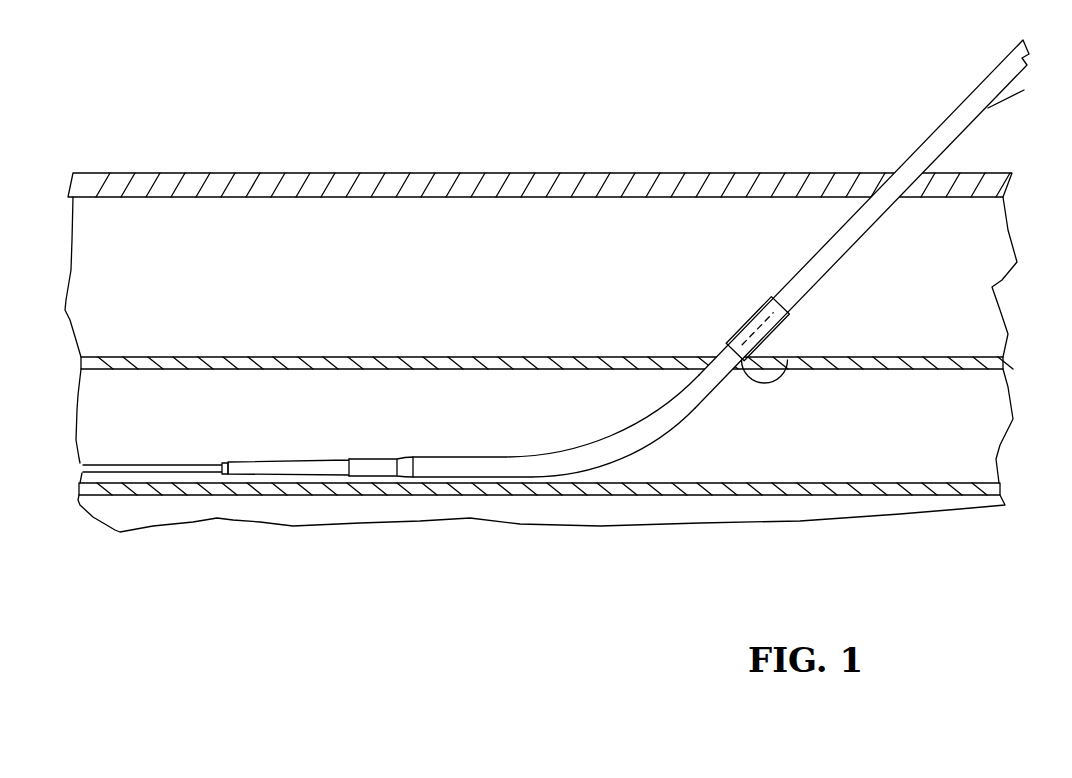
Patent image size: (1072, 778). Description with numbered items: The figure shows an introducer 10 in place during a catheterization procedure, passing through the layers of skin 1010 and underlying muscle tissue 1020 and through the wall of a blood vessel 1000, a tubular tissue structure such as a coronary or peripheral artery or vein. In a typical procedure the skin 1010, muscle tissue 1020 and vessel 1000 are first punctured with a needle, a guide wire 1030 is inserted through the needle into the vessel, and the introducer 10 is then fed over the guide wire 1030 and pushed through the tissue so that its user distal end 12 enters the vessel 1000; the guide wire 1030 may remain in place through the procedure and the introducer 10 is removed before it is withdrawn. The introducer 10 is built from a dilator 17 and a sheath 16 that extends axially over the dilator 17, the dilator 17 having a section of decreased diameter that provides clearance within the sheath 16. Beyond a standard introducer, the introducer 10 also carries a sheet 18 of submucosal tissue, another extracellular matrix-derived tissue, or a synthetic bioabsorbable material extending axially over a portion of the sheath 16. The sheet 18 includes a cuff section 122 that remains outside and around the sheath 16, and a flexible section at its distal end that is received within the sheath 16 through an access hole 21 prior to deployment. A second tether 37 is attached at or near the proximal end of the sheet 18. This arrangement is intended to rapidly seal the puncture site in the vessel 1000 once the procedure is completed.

The introducer 10 is at (906, 140).
The user distal end 12 is at (422, 400).
The sheath 16 is at (468, 468).
The dilator 17 is at (323, 466).
The sheet 18 is at (737, 306).
The access hole 21 is at (788, 360).
The second tether 37 is at (988, 108).
The cuff section 122 is at (789, 314).
The blood vessel 1000 is at (932, 519).
The skin 1010 is at (709, 159).
The muscle tissue 1020 is at (527, 203).
The guide wire 1030 is at (173, 464).